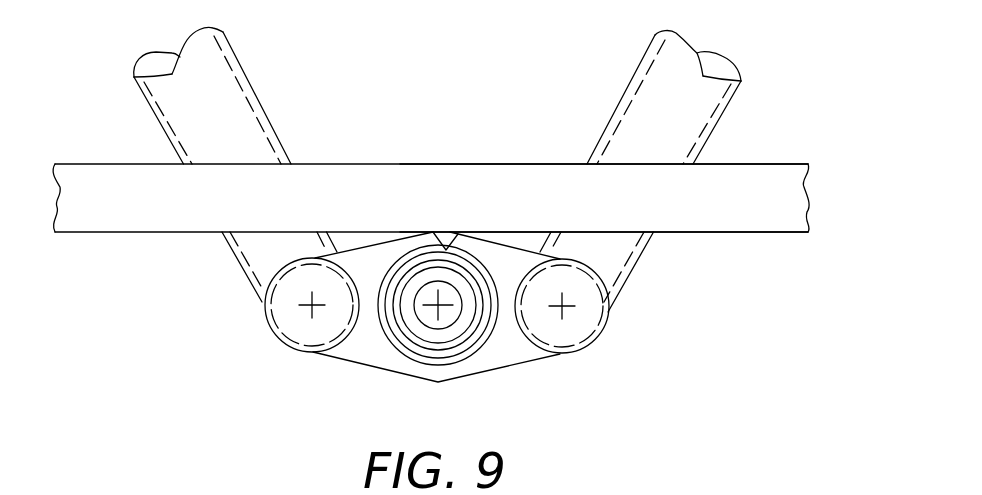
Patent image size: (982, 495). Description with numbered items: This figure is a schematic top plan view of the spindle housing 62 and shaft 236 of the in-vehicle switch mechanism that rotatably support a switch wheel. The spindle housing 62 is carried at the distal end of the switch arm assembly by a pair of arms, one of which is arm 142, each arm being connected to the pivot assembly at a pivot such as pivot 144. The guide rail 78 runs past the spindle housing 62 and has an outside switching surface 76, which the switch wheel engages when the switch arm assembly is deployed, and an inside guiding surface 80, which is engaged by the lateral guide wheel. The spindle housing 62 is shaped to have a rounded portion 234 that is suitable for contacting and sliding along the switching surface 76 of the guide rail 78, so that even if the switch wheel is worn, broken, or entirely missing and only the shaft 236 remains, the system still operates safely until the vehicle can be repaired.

The spindle housing 62 is at (512, 372).
The switching surface 76 is at (763, 232).
The guide rail 78 is at (777, 197).
The guiding surface 80 is at (727, 164).
The arm 142 is at (637, 275).
The pivot 144 is at (228, 257).
The rounded portion 234 is at (466, 253).
The shaft 236 is at (415, 342).